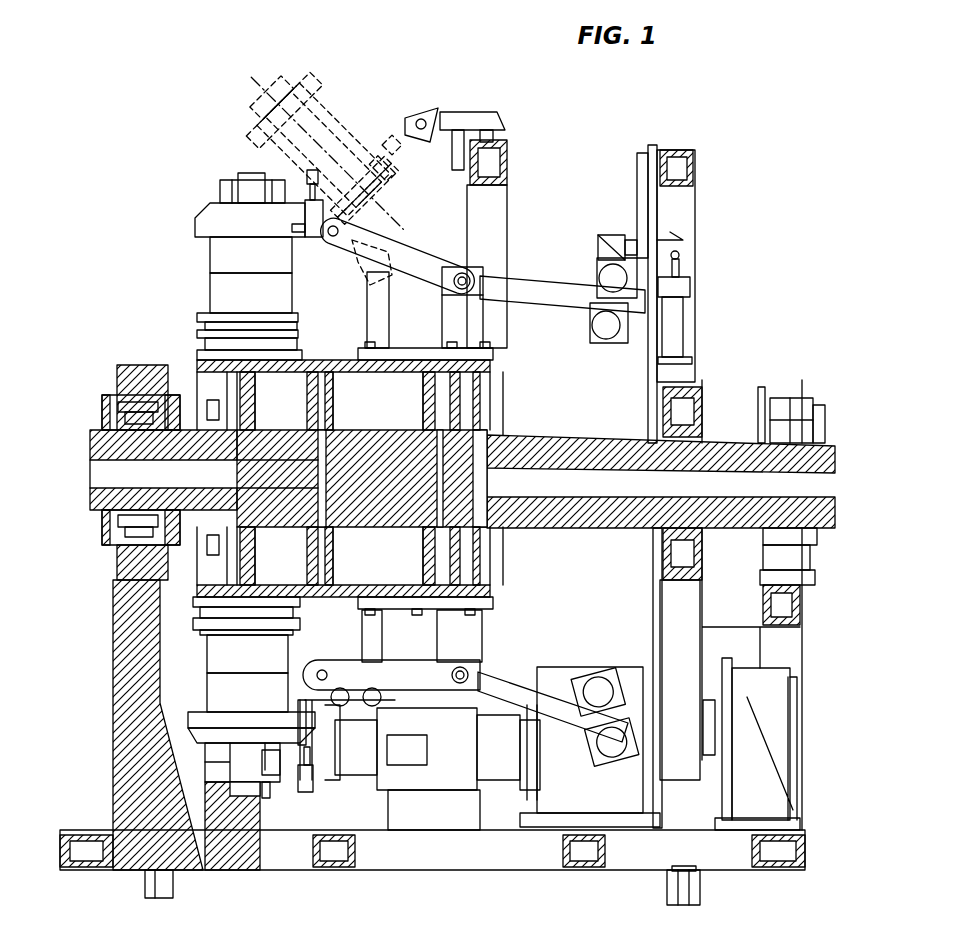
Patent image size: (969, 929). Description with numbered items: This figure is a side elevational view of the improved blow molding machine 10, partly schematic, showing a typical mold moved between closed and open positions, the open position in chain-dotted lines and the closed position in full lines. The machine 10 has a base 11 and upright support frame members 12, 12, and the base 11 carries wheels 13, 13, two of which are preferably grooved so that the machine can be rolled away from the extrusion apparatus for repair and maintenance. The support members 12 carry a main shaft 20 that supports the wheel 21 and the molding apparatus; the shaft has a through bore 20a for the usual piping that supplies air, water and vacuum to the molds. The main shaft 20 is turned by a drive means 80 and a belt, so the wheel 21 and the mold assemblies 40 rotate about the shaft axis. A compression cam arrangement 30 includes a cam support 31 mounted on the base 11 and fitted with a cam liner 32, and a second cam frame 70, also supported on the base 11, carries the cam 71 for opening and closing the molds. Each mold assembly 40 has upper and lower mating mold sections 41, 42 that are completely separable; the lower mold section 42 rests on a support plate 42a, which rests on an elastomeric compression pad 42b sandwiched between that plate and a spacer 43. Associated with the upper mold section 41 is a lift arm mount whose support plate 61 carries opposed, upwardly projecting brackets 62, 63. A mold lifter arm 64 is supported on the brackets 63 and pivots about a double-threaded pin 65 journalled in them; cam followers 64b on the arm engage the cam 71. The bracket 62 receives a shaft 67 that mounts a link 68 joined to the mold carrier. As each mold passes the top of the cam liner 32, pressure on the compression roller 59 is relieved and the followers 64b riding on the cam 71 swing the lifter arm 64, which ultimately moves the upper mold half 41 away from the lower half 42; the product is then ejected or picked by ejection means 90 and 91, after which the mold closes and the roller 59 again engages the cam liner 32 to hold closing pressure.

The molding machine 10 is at (736, 232).
The base 11 is at (62, 855).
The upright support frame member 12 is at (120, 690).
The wheel 13 is at (155, 900).
The main shaft 20 is at (612, 535).
The through bore 20a is at (812, 478).
The wheel 21 is at (490, 596).
The compression cam arrangement 30 is at (290, 818).
The cam support 31 is at (245, 860).
The cam liner 32 is at (248, 785).
The mold assembly 40 is at (205, 277).
The upper mold section 41 is at (280, 120).
The lower mold section 42 is at (235, 290).
The support plate 42a is at (200, 318).
The elastomeric compression pad 42b is at (210, 335).
The spacer 43 is at (200, 355).
The compression roller 59 is at (348, 108).
The support plate 61 is at (495, 360).
The bracket 62 is at (372, 318).
The bracket 63 is at (455, 318).
The mold lifter arm 64 is at (515, 282).
The cam follower 64b is at (613, 340).
The double-threaded pin 65 is at (460, 272).
The shaft 67 is at (375, 265).
The link 68 is at (345, 225).
The second cam frame 70 is at (662, 135).
The cam 71 is at (630, 235).
The drive means 80 is at (593, 790).
The ejection means 90 is at (392, 140).
The ejection means 91 is at (428, 115).